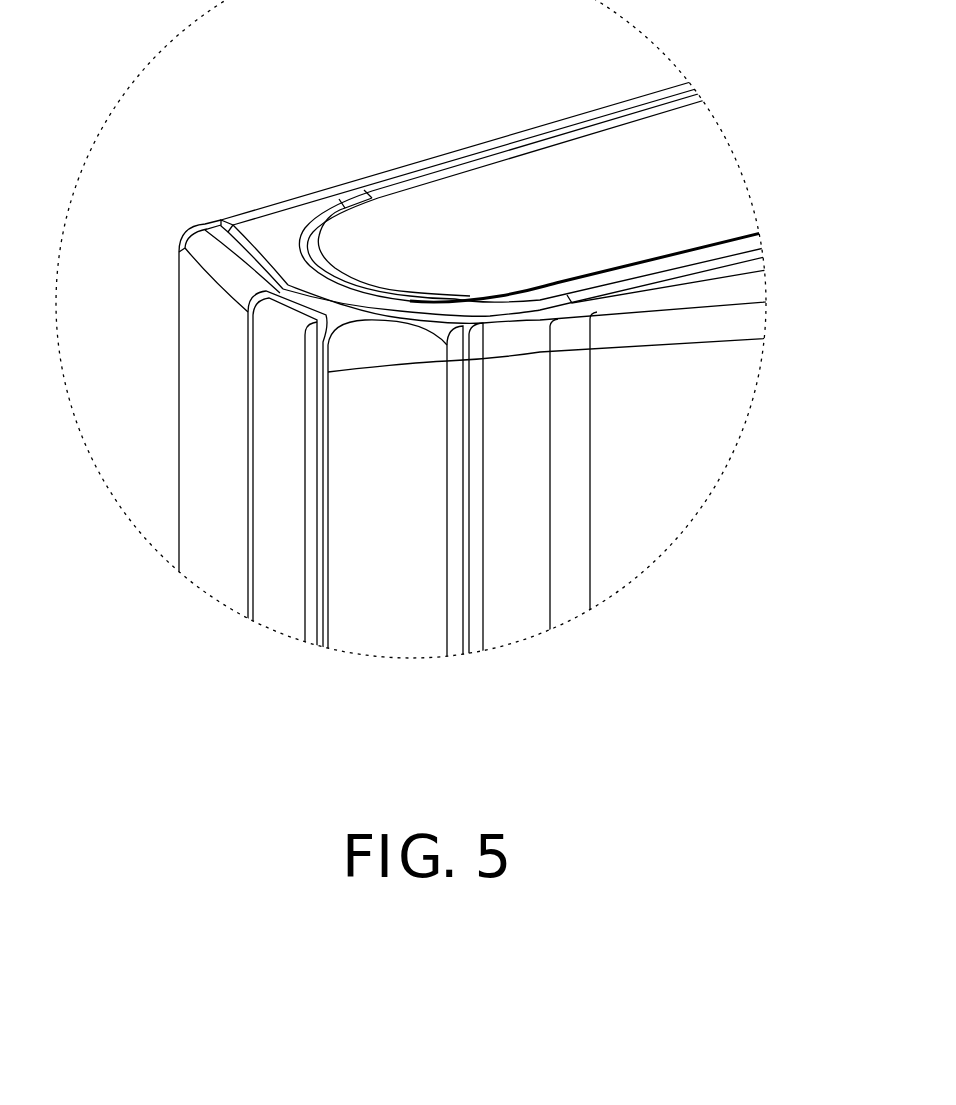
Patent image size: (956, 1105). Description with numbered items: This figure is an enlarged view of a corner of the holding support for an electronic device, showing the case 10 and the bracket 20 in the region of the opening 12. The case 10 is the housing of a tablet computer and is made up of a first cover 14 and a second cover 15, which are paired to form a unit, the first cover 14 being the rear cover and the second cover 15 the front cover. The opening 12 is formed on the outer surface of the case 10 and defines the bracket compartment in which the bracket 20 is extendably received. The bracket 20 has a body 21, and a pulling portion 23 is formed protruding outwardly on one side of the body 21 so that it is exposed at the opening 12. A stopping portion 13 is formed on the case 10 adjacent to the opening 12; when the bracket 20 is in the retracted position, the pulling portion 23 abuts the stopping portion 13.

The case 10 is at (460, 56).
The opening 12 is at (318, 443).
The stopping portion 13 is at (512, 323).
The first cover 14 is at (648, 540).
The second cover 15 is at (459, 150).
The bracket 20 is at (381, 598).
The body 21 is at (608, 278).
The pulling portion 23 is at (405, 340).